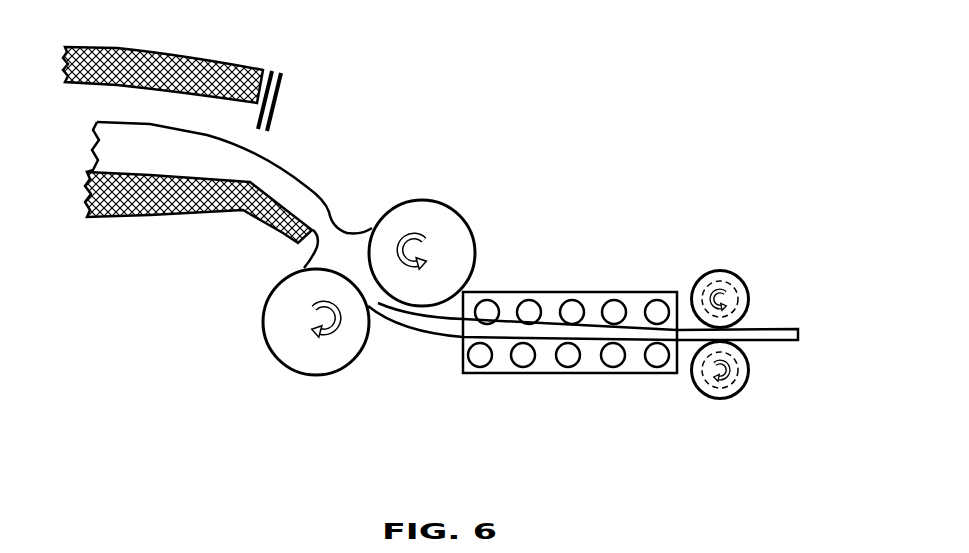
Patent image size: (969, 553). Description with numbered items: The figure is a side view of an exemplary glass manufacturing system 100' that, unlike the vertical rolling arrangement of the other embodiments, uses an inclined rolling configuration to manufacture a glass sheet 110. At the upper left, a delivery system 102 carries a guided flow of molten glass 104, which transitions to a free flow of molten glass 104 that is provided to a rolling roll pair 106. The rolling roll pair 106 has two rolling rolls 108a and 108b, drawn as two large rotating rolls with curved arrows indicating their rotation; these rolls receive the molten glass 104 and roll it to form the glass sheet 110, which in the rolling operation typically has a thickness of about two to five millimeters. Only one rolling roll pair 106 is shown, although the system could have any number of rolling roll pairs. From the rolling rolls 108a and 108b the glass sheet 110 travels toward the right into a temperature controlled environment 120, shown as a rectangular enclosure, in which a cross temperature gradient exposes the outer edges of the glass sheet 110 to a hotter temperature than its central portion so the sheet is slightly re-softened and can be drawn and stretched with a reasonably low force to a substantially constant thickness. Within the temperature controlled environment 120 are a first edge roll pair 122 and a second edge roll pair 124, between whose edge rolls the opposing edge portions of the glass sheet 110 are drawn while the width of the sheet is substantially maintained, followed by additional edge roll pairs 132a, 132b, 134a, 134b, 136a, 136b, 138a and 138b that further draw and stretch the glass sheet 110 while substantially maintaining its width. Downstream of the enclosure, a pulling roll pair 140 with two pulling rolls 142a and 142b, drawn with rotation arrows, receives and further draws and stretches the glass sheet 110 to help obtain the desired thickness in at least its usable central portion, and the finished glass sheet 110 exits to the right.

The glass manufacturing system 100' is at (438, 232).
The delivery system 102 is at (183, 52).
The molten glass 104 is at (247, 167).
The rolling roll pair 106 is at (360, 310).
The rolling roll 108a is at (452, 207).
The rolling roll 108b is at (272, 355).
The glass sheet 110 is at (767, 342).
The temperature controlled environment 120 is at (557, 329).
The first edge roll pair 122 is at (488, 300).
The second edge roll pair 124 is at (482, 367).
The additional edge roll pair 132a is at (530, 300).
The additional edge roll pair 132b is at (522, 367).
The additional edge roll pair 134a is at (573, 300).
The additional edge roll pair 134b is at (567, 367).
The additional edge roll pair 136a is at (615, 300).
The additional edge roll pair 136b is at (613, 367).
The additional edge roll pair 138a is at (663, 301).
The additional edge roll pair 138b is at (657, 367).
The pulling roll pair 140 is at (750, 358).
The pulling roll 142a is at (749, 285).
The pulling roll 142b is at (748, 382).